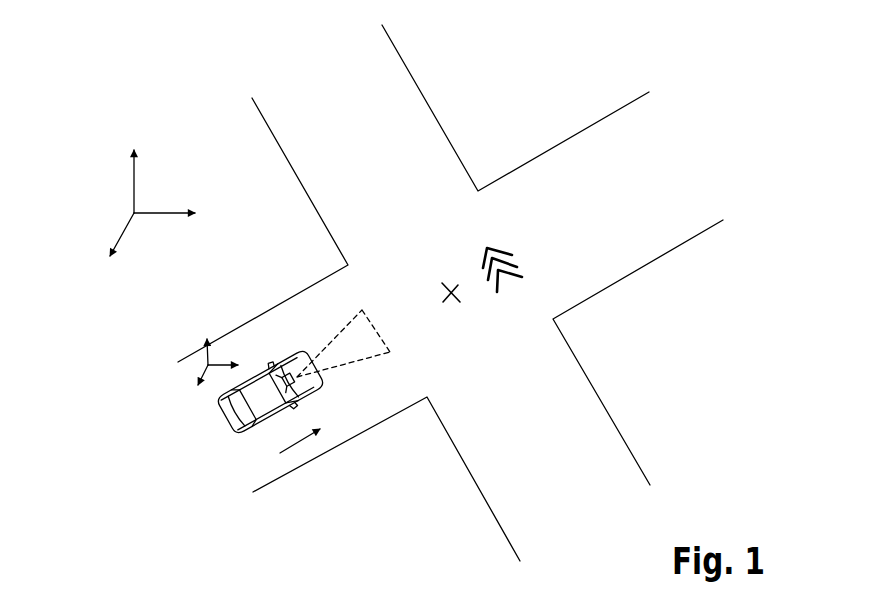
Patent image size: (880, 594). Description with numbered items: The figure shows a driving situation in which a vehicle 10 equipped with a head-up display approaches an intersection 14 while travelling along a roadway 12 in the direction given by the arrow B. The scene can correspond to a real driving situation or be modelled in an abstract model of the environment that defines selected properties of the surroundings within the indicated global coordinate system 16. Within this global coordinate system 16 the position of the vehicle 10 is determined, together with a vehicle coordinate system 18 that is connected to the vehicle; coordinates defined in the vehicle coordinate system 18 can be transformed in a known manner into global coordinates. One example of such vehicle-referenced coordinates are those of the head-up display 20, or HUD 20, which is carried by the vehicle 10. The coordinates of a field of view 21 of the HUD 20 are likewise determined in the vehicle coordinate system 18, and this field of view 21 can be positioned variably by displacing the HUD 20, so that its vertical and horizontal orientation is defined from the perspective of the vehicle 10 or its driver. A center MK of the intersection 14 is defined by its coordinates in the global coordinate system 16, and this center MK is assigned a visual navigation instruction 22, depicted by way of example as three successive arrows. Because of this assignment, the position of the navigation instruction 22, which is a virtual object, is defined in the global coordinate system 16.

The vehicle 10 is at (211, 422).
The roadway 12 is at (257, 316).
The intersection 14 is at (485, 165).
The global coordinate system 16 is at (155, 186).
The vehicle coordinate system 18 is at (190, 370).
The head-up display 20 is at (298, 378).
The field of view 21 is at (330, 343).
The navigation instruction 22 is at (522, 256).
The arrow B is at (293, 452).
The center of the intersection MK is at (452, 298).